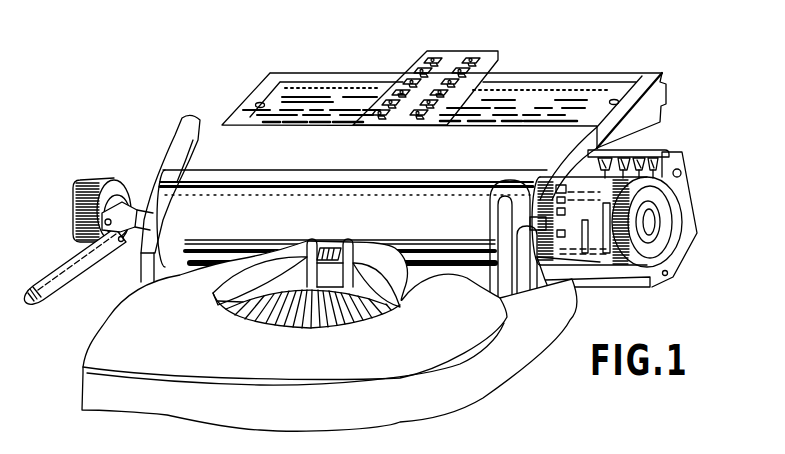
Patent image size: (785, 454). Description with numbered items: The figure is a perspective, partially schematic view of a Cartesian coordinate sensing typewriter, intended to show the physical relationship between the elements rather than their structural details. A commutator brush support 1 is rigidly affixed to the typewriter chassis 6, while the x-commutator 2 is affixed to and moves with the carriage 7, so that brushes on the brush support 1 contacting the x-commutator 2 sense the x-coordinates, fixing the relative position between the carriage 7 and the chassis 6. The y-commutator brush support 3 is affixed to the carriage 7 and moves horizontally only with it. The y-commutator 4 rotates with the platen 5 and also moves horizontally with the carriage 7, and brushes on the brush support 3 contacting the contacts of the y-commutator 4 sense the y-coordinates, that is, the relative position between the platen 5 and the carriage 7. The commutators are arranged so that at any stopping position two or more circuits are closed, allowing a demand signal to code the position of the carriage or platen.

The commutator brush support 1 is at (455, 52).
The x-commutator 2 is at (280, 92).
The y-commutator brush support 3 is at (658, 150).
The y-commutator 4 is at (607, 286).
The platen 5 is at (211, 245).
The typewriter chassis 6 is at (406, 352).
The carriage 7 is at (167, 110).